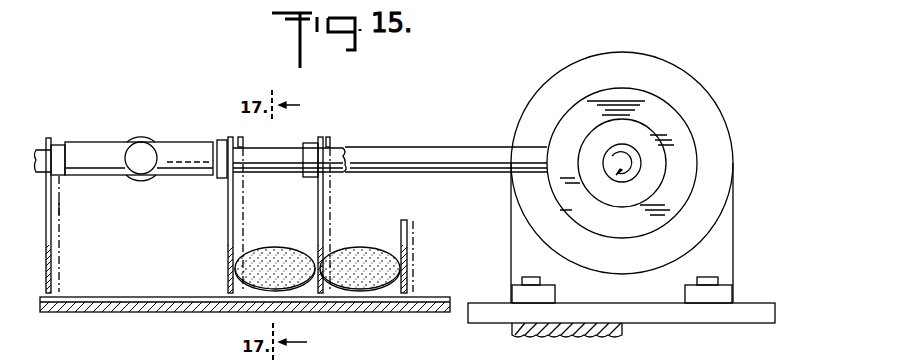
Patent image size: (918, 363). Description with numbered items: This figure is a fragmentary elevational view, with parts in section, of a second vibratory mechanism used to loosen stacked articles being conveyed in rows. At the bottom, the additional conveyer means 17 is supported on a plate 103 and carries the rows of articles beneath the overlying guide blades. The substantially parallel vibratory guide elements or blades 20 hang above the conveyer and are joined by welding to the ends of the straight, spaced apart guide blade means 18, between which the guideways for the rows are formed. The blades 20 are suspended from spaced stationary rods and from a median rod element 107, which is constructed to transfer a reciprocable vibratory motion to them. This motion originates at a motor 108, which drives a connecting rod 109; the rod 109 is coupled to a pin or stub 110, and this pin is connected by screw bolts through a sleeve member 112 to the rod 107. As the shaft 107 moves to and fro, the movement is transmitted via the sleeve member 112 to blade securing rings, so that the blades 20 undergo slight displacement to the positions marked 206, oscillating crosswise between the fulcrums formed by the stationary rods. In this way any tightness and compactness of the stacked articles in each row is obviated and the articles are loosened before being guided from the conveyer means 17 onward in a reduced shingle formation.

The additional conveyer means 17 is at (118, 306).
The guide blade means 18 is at (265, 214).
The vibratory guide elements or blades 20 is at (53, 237).
The plate 103 is at (118, 306).
The median rod element 107 is at (337, 152).
The motor 108 is at (705, 116).
The connecting rod 109 is at (404, 150).
The pin or stub 110 is at (138, 148).
The sleeve member 112 is at (88, 152).
The support plate axis 206 is at (62, 207).